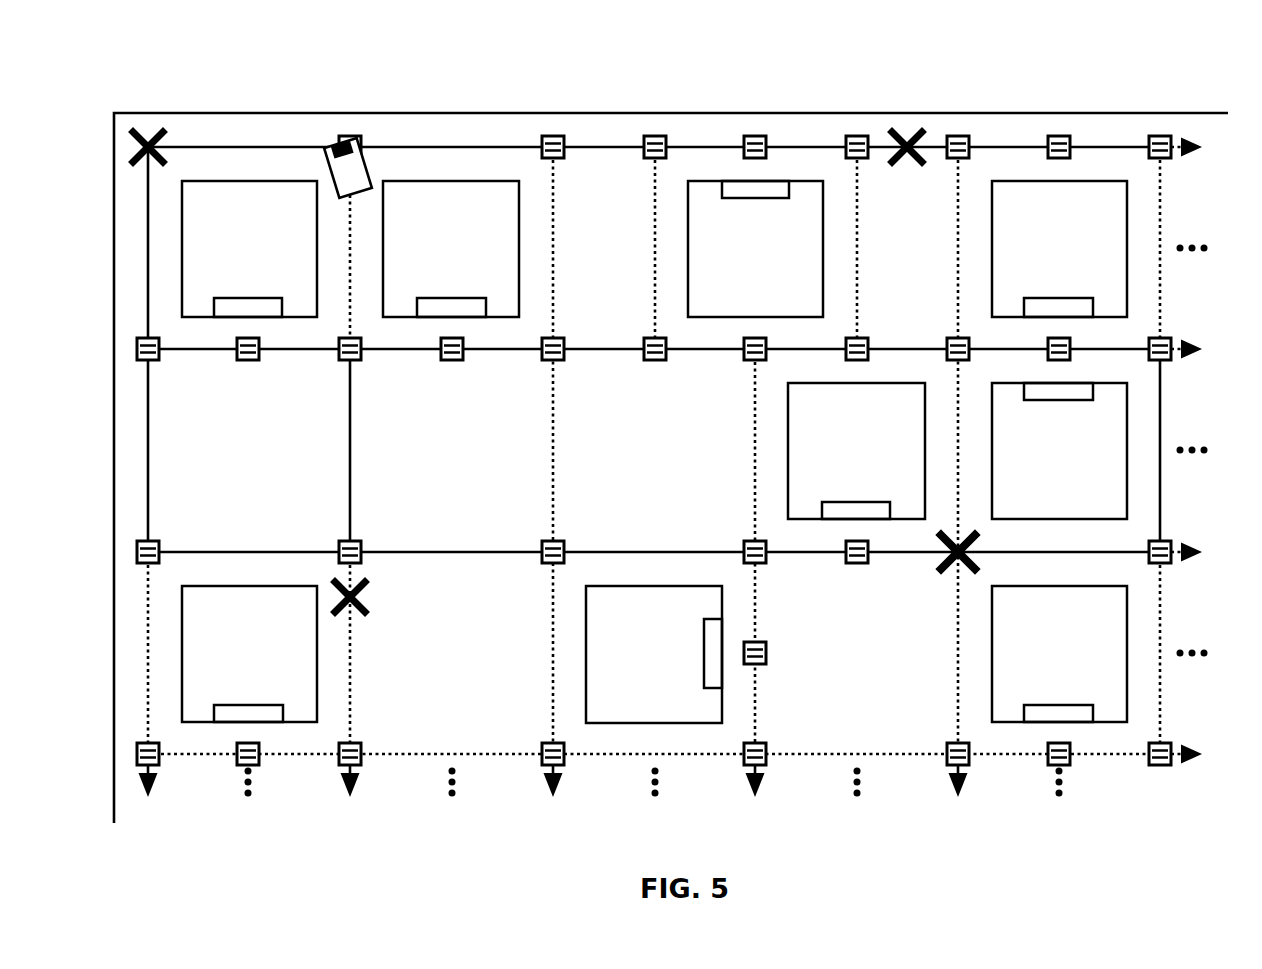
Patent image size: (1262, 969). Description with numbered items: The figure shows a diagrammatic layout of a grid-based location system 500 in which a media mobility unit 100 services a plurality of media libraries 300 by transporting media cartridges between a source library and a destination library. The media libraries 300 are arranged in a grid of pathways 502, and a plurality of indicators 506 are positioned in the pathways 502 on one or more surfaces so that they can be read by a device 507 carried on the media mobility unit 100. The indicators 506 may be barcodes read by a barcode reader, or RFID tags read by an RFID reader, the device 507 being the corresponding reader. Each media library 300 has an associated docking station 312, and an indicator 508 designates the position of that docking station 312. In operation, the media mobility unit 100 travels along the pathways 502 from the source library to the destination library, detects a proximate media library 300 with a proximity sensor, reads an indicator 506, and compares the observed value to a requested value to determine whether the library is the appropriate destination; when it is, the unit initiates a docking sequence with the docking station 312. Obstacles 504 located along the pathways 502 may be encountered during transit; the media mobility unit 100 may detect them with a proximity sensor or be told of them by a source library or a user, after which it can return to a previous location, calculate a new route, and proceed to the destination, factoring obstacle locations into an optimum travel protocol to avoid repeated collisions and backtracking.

The grid-based location system 500 is at (224, 80).
The pathways 502 is at (1162, 188).
The obstacles 504 is at (166, 131).
The indicators 506 is at (557, 337).
The device 507 is at (331, 143).
The indicator 508 is at (244, 362).
The media mobility unit 100 is at (356, 166).
The media library 300 is at (230, 258).
The docking station 312 is at (284, 300).